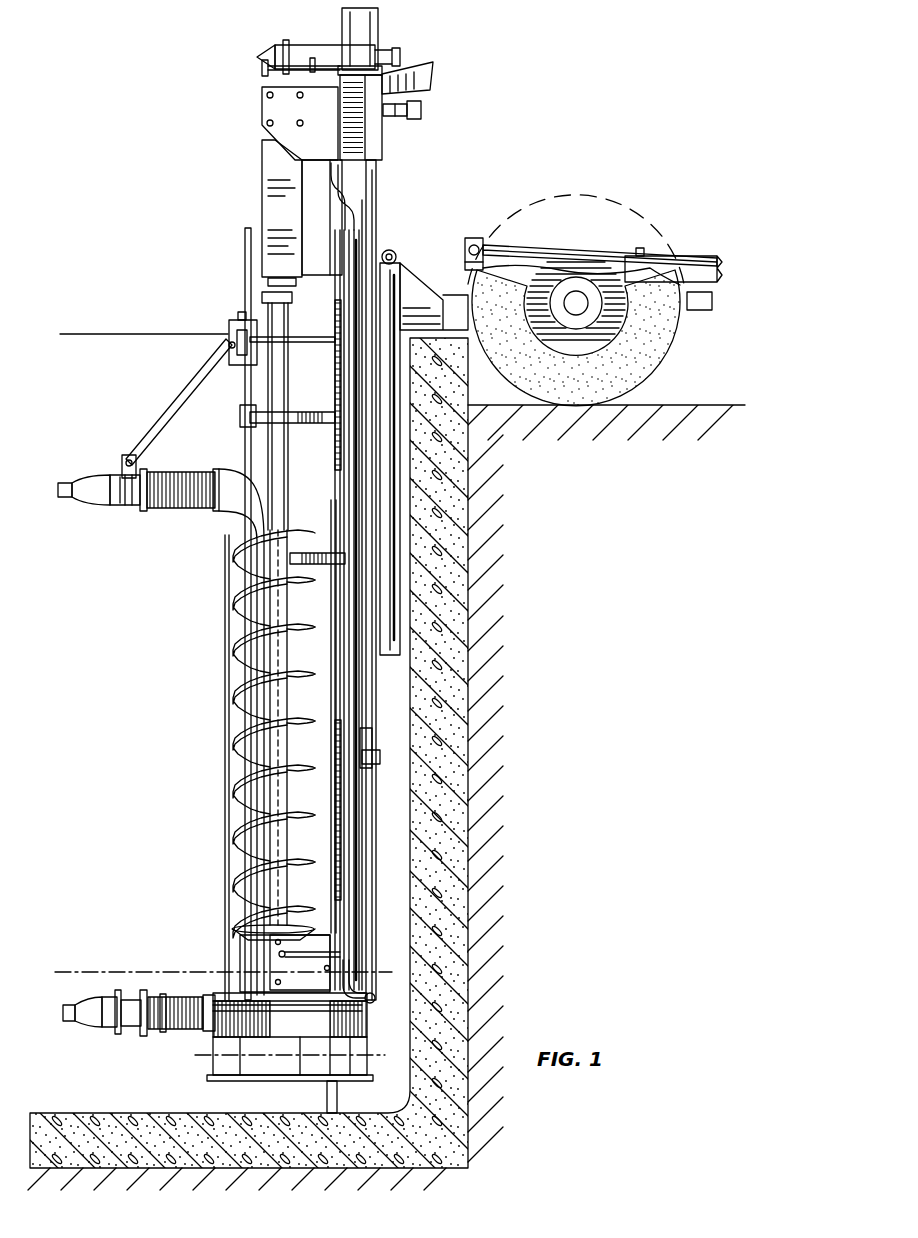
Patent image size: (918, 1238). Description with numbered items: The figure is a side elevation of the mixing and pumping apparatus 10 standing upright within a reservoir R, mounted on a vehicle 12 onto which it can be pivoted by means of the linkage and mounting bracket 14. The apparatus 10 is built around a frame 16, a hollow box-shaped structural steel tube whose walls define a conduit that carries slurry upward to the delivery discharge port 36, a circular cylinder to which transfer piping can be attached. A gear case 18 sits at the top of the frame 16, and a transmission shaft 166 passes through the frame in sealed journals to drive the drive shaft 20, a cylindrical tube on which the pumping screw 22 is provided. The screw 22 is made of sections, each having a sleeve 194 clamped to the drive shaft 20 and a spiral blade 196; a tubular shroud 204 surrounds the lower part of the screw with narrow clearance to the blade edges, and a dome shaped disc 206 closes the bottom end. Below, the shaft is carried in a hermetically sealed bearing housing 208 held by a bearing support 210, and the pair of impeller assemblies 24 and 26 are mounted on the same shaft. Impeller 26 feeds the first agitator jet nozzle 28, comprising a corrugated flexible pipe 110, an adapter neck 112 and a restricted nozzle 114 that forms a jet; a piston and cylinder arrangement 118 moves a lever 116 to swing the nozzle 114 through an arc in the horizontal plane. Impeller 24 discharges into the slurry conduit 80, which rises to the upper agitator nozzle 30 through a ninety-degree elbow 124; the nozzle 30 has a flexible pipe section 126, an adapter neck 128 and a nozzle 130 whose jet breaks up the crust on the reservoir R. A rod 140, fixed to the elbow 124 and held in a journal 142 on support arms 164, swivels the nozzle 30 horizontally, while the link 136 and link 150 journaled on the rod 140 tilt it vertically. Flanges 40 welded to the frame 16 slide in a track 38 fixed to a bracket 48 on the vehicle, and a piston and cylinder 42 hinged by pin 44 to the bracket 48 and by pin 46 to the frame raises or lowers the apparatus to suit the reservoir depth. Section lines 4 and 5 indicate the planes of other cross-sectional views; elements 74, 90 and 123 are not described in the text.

The mixing and pumping apparatus 10 is at (257, 195).
The vehicle 12 is at (690, 250).
The mounting bracket 14 is at (480, 236).
The frame 16 is at (364, 735).
The gear case 18 is at (260, 110).
The drive shaft 20 is at (262, 458).
The pumping screw 22 is at (248, 627).
The impeller assembly 24 is at (258, 1080).
The impeller assembly 26 is at (218, 986).
The first agitator jet nozzle 28 is at (130, 1035).
The agitator jet nozzle 30 is at (143, 516).
The delivery discharge port 36 is at (380, 13).
The track 38 is at (366, 757).
The flanges 40 is at (378, 215).
The piston and cylinder 42 is at (398, 652).
The hinge pin 44 is at (394, 252).
The hinge pin 46 is at (376, 996).
The mounting bracket 48 is at (411, 284).
The anchor pin 74 is at (338, 1100).
The slurry conduit 80 is at (245, 606).
The hydraulic cylinder 90 is at (300, 46).
The flexible pipe 110 is at (163, 997).
The adapter neck 112 is at (150, 996).
The nozzle 114 is at (90, 1020).
The lever 116 is at (163, 1033).
The piston and cylinder arrangement 118 is at (213, 1022).
The casing 123 is at (226, 583).
The elbow 124 is at (238, 540).
The flexible pipe section 126 is at (178, 472).
The adapter neck 128 is at (125, 512).
The nozzle 130 is at (78, 503).
The link 136 is at (205, 357).
The rod 140 is at (244, 240).
The journal 142 is at (238, 414).
The link 150 is at (237, 318).
The support arms 164 is at (303, 412).
The transmission shaft 166 is at (410, 114).
The sleeve 194 is at (258, 666).
The spiral blade 196 is at (248, 708).
The tubular shroud 204 is at (268, 780).
The dome shaped disc 206 is at (288, 828).
The bearing housing 208 is at (265, 915).
The bearing support 210 is at (320, 946).
The reservoir R is at (412, 560).
The section line 4- 4 is at (193, 1080).
The section line 5- 5 is at (57, 998).